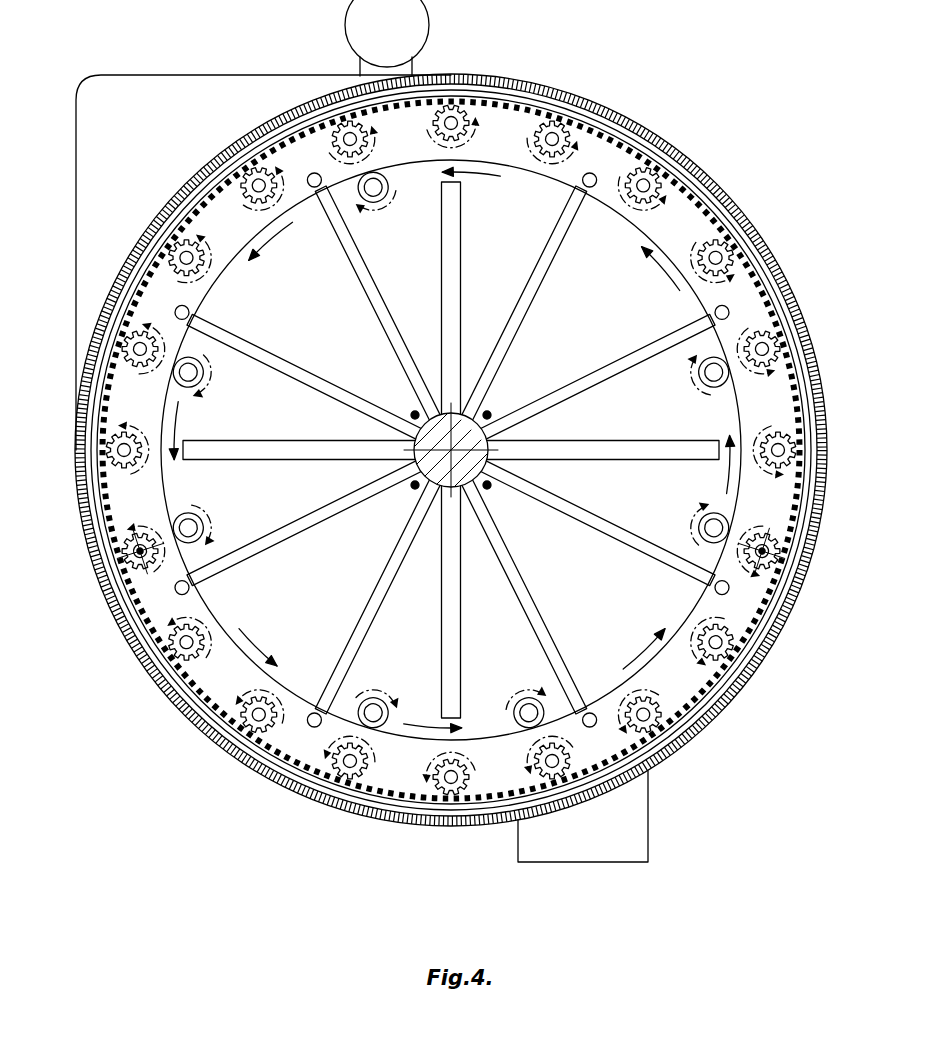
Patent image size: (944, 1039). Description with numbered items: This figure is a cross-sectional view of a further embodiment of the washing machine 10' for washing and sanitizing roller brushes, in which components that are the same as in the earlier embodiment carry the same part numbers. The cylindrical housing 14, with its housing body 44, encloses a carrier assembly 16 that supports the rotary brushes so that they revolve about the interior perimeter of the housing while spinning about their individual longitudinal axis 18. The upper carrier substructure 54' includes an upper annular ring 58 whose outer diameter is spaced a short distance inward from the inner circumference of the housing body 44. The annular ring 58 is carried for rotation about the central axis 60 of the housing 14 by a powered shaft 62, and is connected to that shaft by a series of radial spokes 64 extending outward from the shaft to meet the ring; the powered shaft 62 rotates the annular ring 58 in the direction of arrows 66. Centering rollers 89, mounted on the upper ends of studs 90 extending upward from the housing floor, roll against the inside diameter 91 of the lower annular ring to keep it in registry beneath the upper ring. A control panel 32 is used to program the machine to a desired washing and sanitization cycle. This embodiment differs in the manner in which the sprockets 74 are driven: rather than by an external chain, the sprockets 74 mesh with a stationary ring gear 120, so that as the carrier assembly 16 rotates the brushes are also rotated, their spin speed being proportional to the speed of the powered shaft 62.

The washing machine 10' is at (421, 238).
The cylindrical housing 14 is at (806, 580).
The carrier assembly 16 is at (94, 527).
The longitudinal axis 18 is at (128, 560).
The control panel 32 is at (598, 863).
The housing body 44 is at (278, 782).
The upper carrier substructure 54' is at (451, 450).
The upper annular ring 58 is at (130, 493).
The central axis 60 is at (489, 414).
The powered shaft 62 is at (462, 413).
The radial spokes 64 is at (228, 333).
The arrows 66 is at (479, 173).
The sprockets 74 is at (719, 241).
The centering rollers 89 is at (188, 370).
The studs 90 is at (122, 374).
The inside diameter 91 is at (163, 477).
The ring gear 120 is at (612, 140).